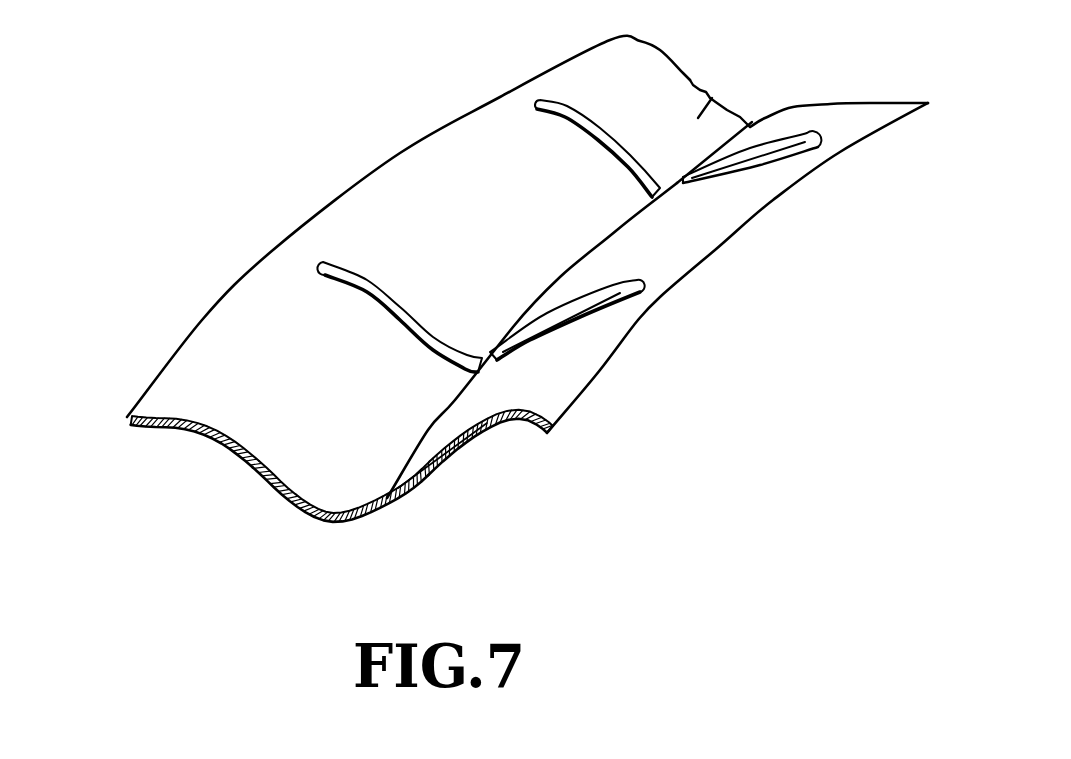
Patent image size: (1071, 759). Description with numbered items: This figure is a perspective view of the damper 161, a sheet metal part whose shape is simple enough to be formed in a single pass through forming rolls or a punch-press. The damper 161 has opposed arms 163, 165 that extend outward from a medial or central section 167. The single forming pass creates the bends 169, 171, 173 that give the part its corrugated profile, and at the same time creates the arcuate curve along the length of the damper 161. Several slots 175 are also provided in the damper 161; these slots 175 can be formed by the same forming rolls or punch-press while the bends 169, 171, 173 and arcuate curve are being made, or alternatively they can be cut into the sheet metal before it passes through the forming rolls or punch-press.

The damper 161 is at (236, 180).
The arm 163 is at (130, 425).
The arm 165 is at (545, 435).
The medial or central section 167 is at (714, 99).
The bend 169 is at (163, 395).
The bend 171 is at (333, 527).
The bend 173 is at (535, 402).
The slot 175 is at (567, 110).